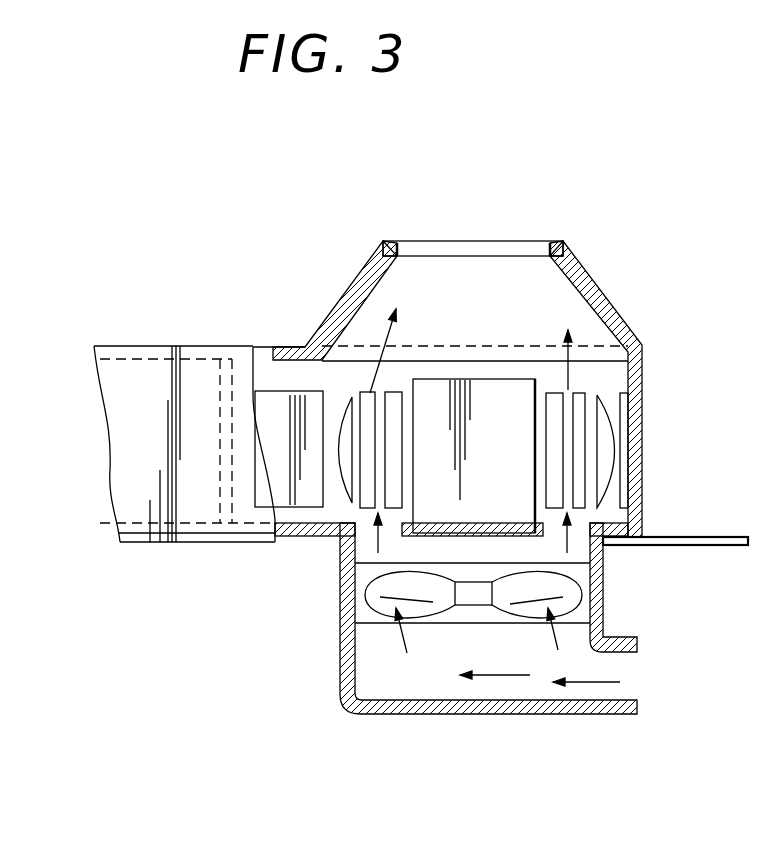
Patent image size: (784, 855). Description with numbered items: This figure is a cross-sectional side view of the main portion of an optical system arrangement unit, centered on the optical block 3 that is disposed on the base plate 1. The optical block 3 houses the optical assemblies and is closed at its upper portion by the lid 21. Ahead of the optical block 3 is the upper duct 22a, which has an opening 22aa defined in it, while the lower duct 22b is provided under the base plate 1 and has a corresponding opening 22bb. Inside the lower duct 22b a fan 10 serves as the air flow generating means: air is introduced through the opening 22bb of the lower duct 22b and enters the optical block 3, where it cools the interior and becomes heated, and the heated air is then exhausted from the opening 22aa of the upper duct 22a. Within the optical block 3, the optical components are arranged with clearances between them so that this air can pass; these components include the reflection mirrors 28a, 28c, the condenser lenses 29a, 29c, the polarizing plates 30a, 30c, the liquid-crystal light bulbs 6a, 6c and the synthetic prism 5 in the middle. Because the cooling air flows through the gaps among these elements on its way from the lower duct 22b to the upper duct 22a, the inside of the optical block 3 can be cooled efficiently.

The base plate 1 is at (637, 548).
The optical block 3 is at (665, 447).
The synthetic prism 5 is at (487, 398).
The liquid-crystal light bulb 6a is at (392, 385).
The liquid-crystal light bulb 6c is at (550, 385).
The fan 10 is at (383, 587).
The lid 21 is at (130, 346).
The upper duct 22a is at (595, 287).
The opening 22aa is at (503, 241).
The lower duct 22b is at (497, 714).
The opening 22bb is at (636, 673).
The reflection mirror 28a is at (272, 405).
The reflection mirror 28c is at (623, 428).
The condenser lens 29a is at (375, 385).
The condenser lens 29c is at (605, 418).
The polarizing plate 30a is at (343, 395).
The polarizing plate 30c is at (643, 352).